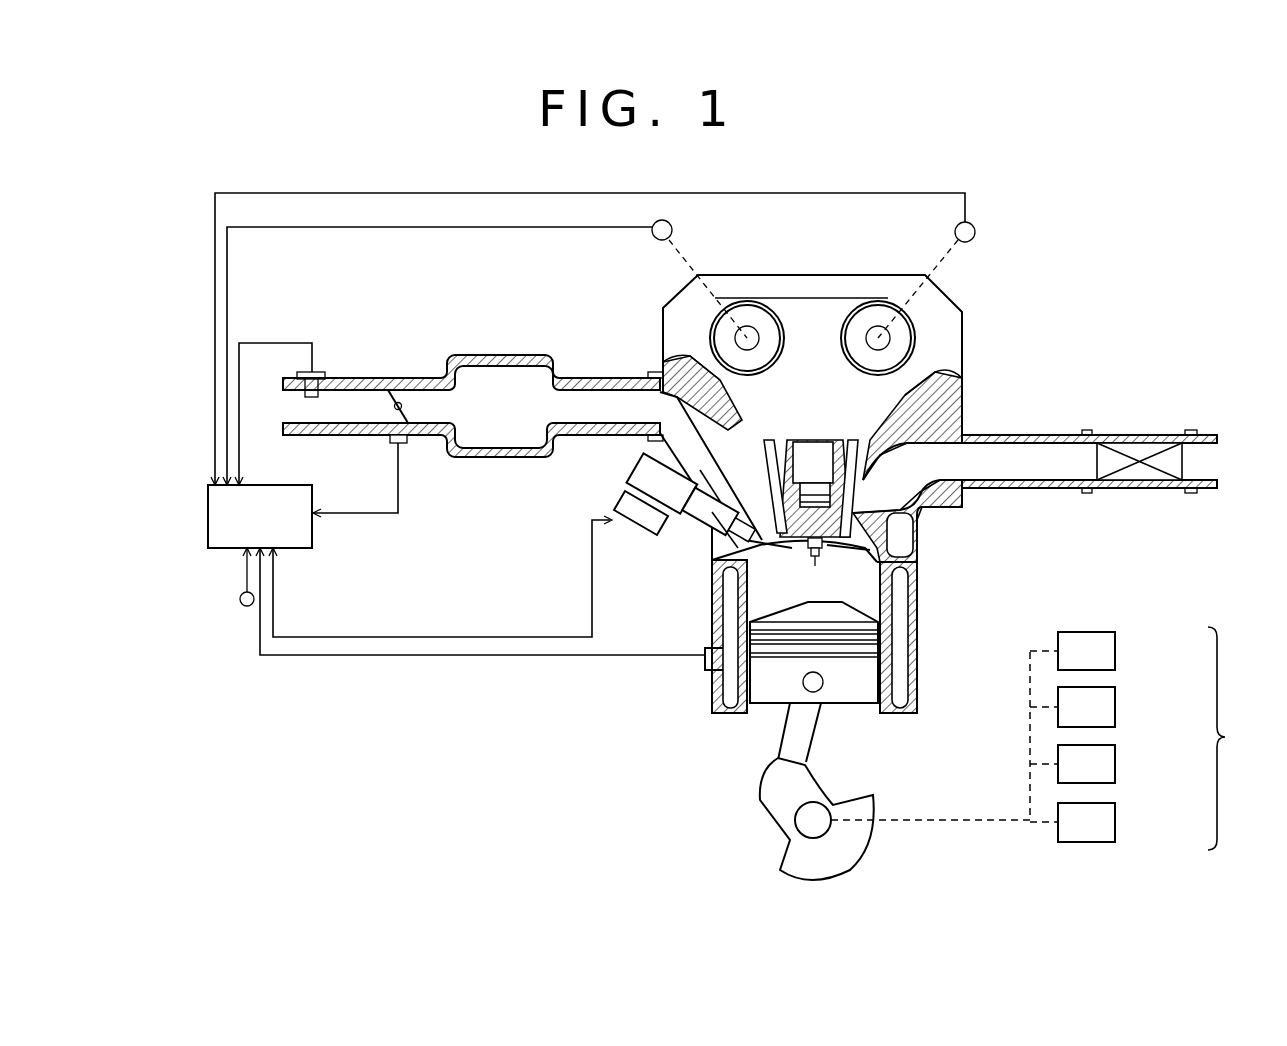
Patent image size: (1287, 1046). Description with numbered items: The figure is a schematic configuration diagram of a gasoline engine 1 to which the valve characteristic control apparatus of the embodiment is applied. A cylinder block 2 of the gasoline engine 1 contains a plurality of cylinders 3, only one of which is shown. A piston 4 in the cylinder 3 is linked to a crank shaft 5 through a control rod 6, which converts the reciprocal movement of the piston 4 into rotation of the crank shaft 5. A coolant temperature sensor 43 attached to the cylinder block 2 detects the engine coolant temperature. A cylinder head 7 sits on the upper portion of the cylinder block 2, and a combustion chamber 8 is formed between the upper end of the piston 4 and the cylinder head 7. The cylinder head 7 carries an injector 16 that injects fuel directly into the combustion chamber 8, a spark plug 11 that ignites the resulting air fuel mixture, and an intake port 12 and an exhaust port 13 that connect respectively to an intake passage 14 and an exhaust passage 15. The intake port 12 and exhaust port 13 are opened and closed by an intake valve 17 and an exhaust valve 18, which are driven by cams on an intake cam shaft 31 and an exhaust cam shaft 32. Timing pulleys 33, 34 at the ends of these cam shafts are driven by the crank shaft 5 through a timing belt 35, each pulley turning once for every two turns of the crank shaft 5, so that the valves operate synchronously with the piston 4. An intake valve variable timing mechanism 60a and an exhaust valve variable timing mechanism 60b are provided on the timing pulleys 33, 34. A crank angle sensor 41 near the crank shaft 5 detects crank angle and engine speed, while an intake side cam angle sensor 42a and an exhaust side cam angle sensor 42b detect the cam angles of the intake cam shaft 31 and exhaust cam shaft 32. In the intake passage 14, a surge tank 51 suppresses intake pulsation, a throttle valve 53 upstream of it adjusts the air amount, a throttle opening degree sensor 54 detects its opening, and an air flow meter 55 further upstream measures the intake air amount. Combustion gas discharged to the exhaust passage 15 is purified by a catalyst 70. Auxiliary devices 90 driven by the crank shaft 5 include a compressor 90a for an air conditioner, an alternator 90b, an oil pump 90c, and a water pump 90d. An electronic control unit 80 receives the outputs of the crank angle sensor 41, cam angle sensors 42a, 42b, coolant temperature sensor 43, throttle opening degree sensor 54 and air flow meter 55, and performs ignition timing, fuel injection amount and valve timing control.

The gasoline engine 1 is at (952, 573).
The cylinder block 2 is at (712, 606).
The cylinder 3 is at (873, 712).
The piston 4 is at (775, 620).
The crank shaft 5 is at (873, 847).
The control rod 6 is at (782, 730).
The cylinder head 7 is at (963, 400).
The combustion chamber 8 is at (917, 612).
The spark plug 11 is at (877, 590).
The intake port 12 is at (735, 433).
The exhaust port 13 is at (885, 443).
The intake passage 14 is at (600, 378).
The exhaust passage 15 is at (1052, 435).
The injector 16 is at (630, 480).
The intake valve 17 is at (710, 540).
The exhaust valve 18 is at (915, 532).
The intake cam shaft 31 is at (755, 350).
The exhaust cam shaft 32 is at (867, 350).
The timing pulley 33 is at (783, 317).
The timing pulley 34 is at (842, 357).
The timing belt 35 is at (812, 298).
The crank angle sensor 41 is at (242, 606).
The intake side cam angle sensor 42a is at (654, 240).
The exhaust side cam angle sensor 42b is at (973, 240).
The coolant temperature sensor 43 is at (705, 665).
The surge tank 51 is at (500, 355).
The throttle valve 53 is at (393, 390).
The throttle opening degree sensor 54 is at (397, 443).
The air flow meter 55 is at (312, 372).
The intake valve variable timing mechanism 60a is at (740, 312).
The exhaust valve variable timing mechanism 60b is at (882, 312).
The catalyst 70 is at (1140, 460).
The electronic control unit 80 is at (208, 515).
The auxiliary devices 90 is at (1041, 738).
The compressor 90a is at (1115, 651).
The alternator 90b is at (1115, 707).
The oil pump 90c is at (1115, 764).
The water pump 90d is at (1115, 822).